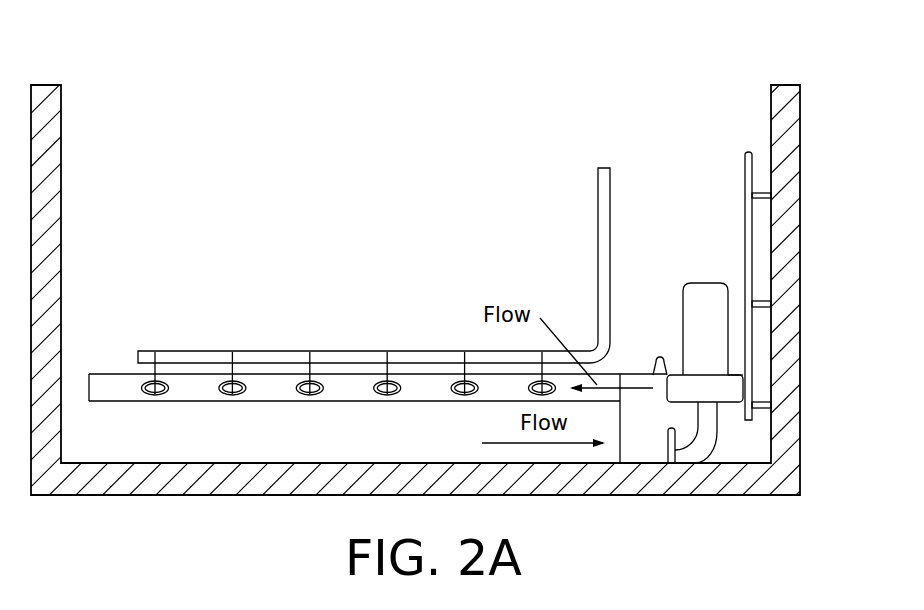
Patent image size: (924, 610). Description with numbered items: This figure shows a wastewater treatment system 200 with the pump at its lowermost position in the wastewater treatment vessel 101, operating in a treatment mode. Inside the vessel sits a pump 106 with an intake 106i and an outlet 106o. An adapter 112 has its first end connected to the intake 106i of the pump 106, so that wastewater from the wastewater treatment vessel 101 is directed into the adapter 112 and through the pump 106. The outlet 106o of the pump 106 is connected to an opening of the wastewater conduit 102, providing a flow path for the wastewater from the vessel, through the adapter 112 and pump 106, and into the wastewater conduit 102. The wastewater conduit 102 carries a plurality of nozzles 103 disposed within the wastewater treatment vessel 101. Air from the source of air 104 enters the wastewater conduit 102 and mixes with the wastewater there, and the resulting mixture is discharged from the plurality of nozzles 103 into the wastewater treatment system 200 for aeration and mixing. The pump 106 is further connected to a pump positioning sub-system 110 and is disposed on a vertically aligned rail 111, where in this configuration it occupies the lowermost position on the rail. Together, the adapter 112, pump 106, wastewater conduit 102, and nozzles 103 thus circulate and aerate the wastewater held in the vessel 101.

The wastewater treatment system 200 is at (298, 62).
The wastewater treatment vessel 101 is at (61, 177).
The wastewater conduit 102 is at (97, 369).
The plurality of nozzles 103 is at (233, 396).
The source of air 104 is at (598, 168).
The pump 106 is at (717, 279).
The outlet 106o is at (668, 373).
The intake 106i is at (737, 370).
The pump positioning sub-system 110 is at (748, 150).
The vertically aligned rail 111 is at (750, 420).
The adapter 112 is at (717, 438).